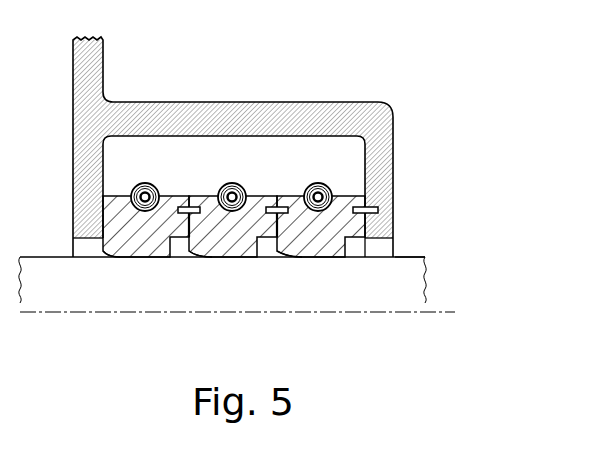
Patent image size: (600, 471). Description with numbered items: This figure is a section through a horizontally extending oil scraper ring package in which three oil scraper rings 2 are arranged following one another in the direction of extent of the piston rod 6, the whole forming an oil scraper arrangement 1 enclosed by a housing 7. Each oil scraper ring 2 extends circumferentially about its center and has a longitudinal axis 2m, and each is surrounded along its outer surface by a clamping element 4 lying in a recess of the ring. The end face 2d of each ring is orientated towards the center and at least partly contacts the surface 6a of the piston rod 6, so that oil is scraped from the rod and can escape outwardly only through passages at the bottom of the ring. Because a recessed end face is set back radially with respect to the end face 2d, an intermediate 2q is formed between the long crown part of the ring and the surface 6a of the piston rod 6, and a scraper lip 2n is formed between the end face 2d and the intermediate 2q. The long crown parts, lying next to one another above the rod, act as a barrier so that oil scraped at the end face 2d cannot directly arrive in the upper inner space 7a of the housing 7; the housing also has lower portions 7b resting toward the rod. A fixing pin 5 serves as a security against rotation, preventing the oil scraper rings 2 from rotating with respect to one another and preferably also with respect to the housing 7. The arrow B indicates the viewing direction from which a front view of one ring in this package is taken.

The oil scraper arrangement 1 is at (265, 206).
The oil scraper ring 2 is at (226, 276).
The end face 2d is at (117, 260).
The longitudinal axis 2m is at (53, 314).
The scraper lip 2n is at (167, 265).
The intermediate 2q is at (178, 250).
The clamping element 4 is at (151, 186).
The fixing pin 5 is at (196, 206).
The piston rod 6 is at (259, 300).
The surface of the piston rod 6a is at (428, 252).
The housing 7 is at (235, 147).
The upper inner space of the housing 7a is at (358, 151).
The housing leg 7b is at (82, 251).
The direction B is at (432, 208).